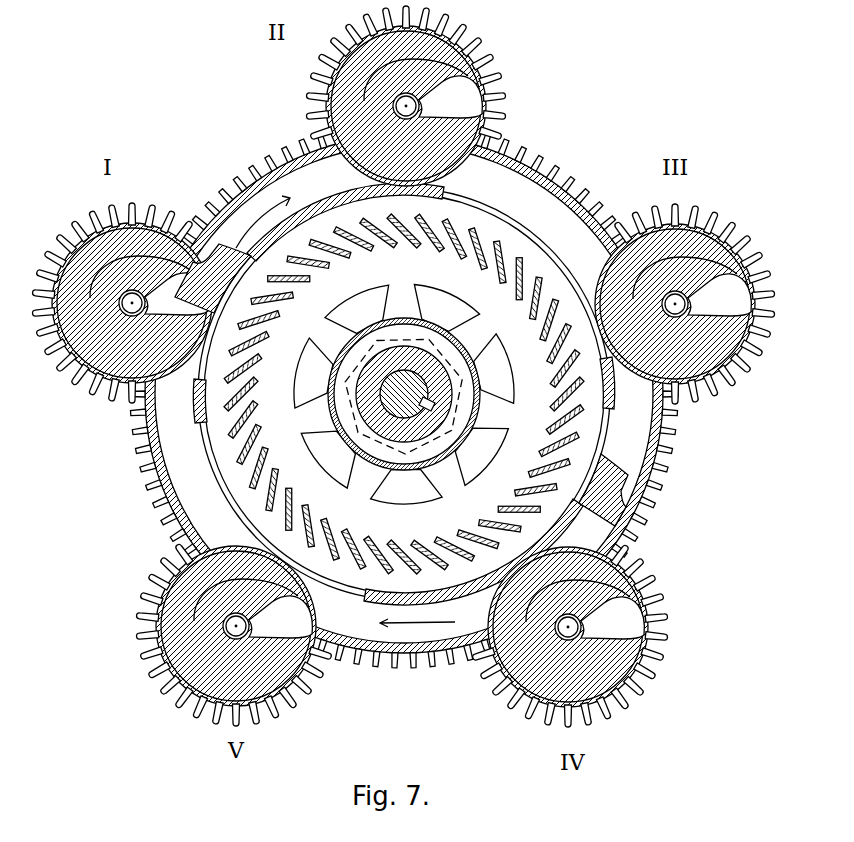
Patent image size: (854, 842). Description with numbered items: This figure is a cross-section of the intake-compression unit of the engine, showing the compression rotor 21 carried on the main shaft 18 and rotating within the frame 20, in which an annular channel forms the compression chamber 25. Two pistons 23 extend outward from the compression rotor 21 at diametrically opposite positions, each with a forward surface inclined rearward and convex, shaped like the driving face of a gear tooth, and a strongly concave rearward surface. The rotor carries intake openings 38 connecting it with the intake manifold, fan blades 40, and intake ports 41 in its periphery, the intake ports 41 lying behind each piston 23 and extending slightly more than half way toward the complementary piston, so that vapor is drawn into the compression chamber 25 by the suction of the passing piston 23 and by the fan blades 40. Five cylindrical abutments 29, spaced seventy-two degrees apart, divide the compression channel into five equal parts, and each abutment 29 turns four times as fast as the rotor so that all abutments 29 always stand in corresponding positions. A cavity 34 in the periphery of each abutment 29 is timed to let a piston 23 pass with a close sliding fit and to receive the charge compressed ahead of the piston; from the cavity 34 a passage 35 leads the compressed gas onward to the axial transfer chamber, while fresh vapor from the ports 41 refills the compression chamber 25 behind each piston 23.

The main shaft 18 is at (428, 393).
The frame 20 is at (262, 172).
The compression rotor 21 is at (345, 201).
The piston 23 is at (208, 286).
The compression chamber 25 is at (404, 394).
The abutment 29 is at (335, 100).
The cavity 34 is at (470, 105).
The passage 35 is at (418, 110).
The intake opening 38 is at (404, 392).
The fan blade 40 is at (478, 252).
The intake port 41 is at (468, 205).